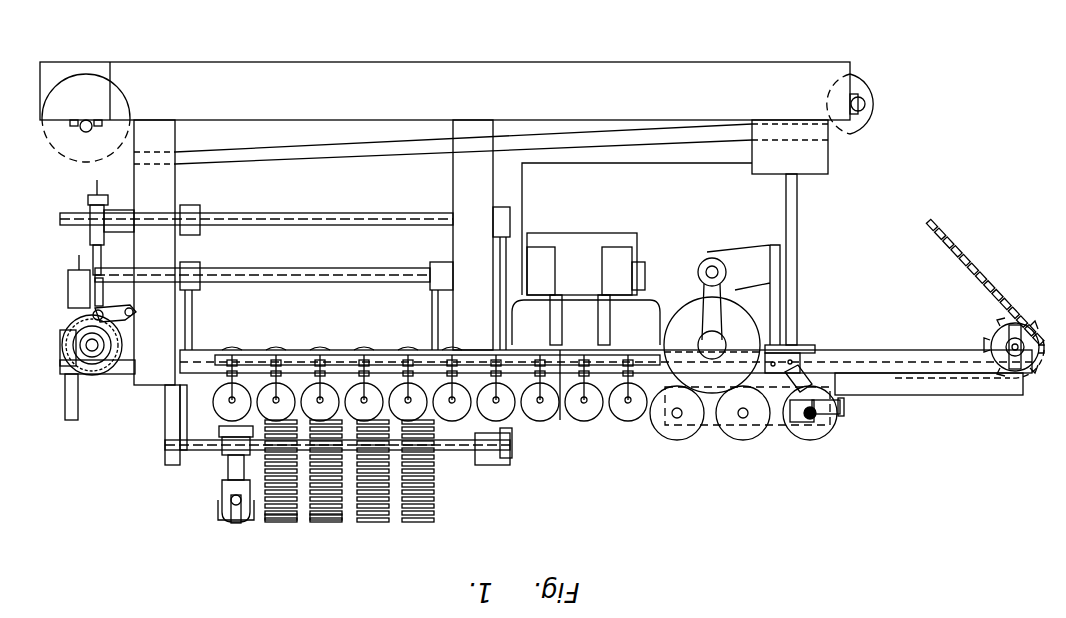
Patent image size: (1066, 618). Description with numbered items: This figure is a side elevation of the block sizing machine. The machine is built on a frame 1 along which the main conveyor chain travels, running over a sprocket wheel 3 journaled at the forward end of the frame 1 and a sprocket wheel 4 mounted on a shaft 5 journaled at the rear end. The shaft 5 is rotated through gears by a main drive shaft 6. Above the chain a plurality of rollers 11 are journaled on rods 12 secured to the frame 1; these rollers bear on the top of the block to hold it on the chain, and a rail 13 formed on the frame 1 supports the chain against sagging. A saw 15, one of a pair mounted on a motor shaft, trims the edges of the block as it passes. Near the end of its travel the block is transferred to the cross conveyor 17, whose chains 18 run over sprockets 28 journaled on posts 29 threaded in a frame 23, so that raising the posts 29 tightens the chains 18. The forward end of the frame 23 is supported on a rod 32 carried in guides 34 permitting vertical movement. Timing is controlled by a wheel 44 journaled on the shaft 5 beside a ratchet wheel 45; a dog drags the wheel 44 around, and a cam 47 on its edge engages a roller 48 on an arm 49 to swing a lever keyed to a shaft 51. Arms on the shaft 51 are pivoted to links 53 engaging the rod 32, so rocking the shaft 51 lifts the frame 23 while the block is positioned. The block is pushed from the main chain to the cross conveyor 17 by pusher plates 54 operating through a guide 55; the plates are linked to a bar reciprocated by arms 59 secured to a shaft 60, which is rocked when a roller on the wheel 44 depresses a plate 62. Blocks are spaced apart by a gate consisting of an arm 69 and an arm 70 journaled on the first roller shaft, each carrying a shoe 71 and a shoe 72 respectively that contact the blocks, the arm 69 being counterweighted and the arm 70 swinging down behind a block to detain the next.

The frame 1 is at (178, 62).
The sprocket wheel 3 is at (995, 333).
The sprocket wheel 4 is at (970, 265).
The shaft 5 is at (85, 348).
The main drive shaft 6 is at (625, 322).
The rollers 11 is at (540, 415).
The rods 12 is at (628, 405).
The rail 13 is at (855, 350).
The saw 15 is at (692, 318).
The cross conveyor 17 is at (320, 507).
The chains 18 is at (318, 520).
The frame 23 is at (226, 458).
The sprockets 28 is at (232, 518).
The posts 29 is at (226, 470).
The rod 32 is at (460, 450).
The guides 34 is at (170, 403).
The wheel 44 is at (62, 340).
The ratchet wheel 45 is at (82, 336).
The cam 47 is at (72, 300).
The roller 48 is at (96, 312).
The arm 49 is at (93, 258).
The shaft 51 is at (320, 222).
The links 53 is at (205, 225).
The pusher plates 54 is at (232, 385).
The guide 55 is at (300, 385).
The arms 59 is at (430, 285).
The shaft 60 is at (310, 278).
The plate 62 is at (65, 395).
The arm 69 is at (800, 418).
The arm 70 is at (838, 410).
The shoe 71 is at (800, 385).
The shoe 72 is at (845, 402).